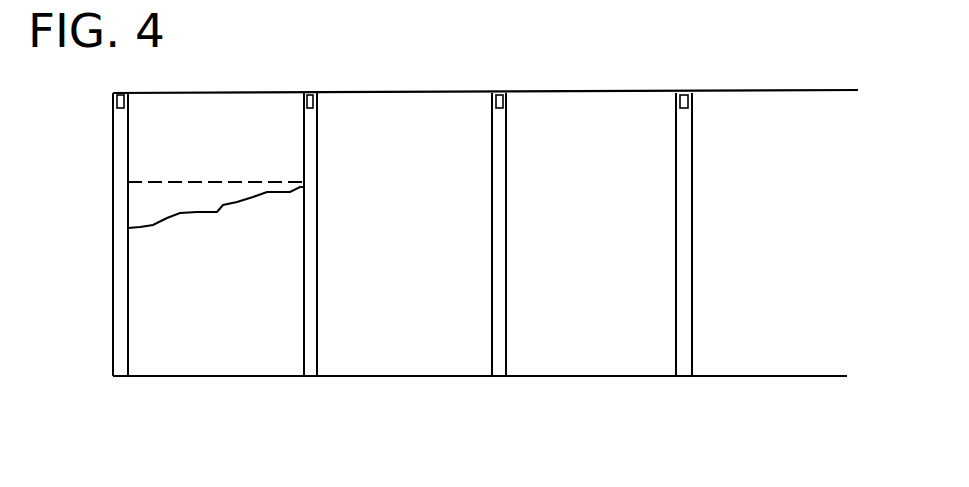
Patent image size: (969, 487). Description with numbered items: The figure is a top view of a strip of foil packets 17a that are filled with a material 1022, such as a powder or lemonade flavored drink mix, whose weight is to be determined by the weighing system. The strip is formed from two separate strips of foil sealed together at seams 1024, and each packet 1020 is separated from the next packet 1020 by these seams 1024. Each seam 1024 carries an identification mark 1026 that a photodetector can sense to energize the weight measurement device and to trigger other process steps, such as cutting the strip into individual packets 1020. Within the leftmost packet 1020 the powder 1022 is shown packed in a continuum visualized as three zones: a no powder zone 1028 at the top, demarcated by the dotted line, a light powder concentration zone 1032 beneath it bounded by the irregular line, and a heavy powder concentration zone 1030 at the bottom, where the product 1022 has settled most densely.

The strip of foil packets 17a is at (101, 324).
The packet 1020 is at (229, 379).
The material 1022 is at (265, 367).
The seam 1024 is at (113, 152).
The identification mark 1026 is at (309, 93).
The no powder zone 1028 is at (240, 143).
The heavy powder concentration zone 1030 is at (240, 341).
The light powder concentration zone 1032 is at (240, 259).